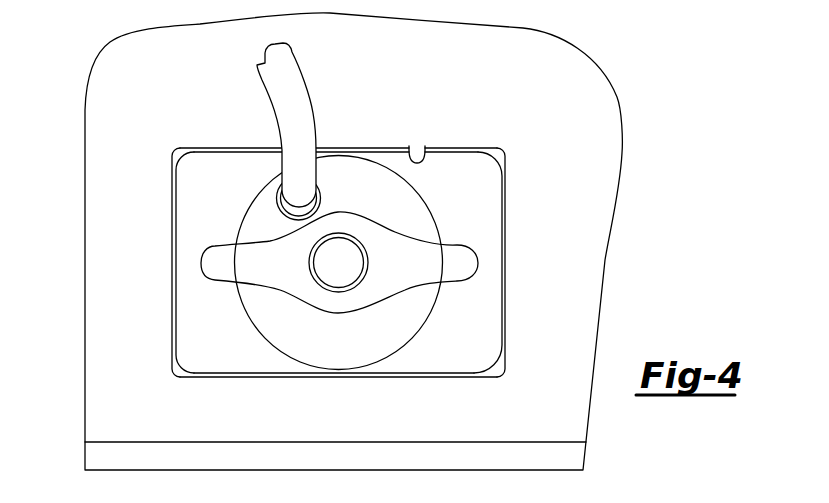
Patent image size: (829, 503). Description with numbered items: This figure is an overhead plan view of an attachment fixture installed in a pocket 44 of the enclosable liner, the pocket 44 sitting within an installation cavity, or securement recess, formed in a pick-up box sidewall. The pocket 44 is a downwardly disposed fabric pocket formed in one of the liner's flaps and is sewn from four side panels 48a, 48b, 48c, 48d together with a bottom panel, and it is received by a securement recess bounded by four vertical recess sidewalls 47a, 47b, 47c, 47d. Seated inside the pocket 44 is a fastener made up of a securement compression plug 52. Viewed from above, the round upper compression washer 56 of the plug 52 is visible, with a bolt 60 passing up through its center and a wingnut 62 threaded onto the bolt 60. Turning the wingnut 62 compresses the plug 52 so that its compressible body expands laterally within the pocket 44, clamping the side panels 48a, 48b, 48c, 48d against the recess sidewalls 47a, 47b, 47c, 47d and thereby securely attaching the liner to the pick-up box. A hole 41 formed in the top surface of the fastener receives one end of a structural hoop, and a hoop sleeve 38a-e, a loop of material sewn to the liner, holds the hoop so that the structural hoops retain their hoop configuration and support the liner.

The hoop sleeves 38a-e is at (298, 97).
The hole 41 is at (266, 197).
The pocket 44 is at (313, 256).
The recess sidewall 47a is at (507, 318).
The recess sidewall 47b is at (173, 245).
The recess sidewall 47c is at (323, 380).
The recess sidewall 47d is at (235, 147).
The side panel 48a is at (497, 258).
The side panel 48b is at (175, 292).
The side panel 48c is at (243, 367).
The side panel 48d is at (417, 160).
The securement compression plug 52 is at (313, 256).
The upper compression washer 56 is at (268, 322).
The bolt 60 is at (347, 267).
The wingnut 62 is at (465, 250).